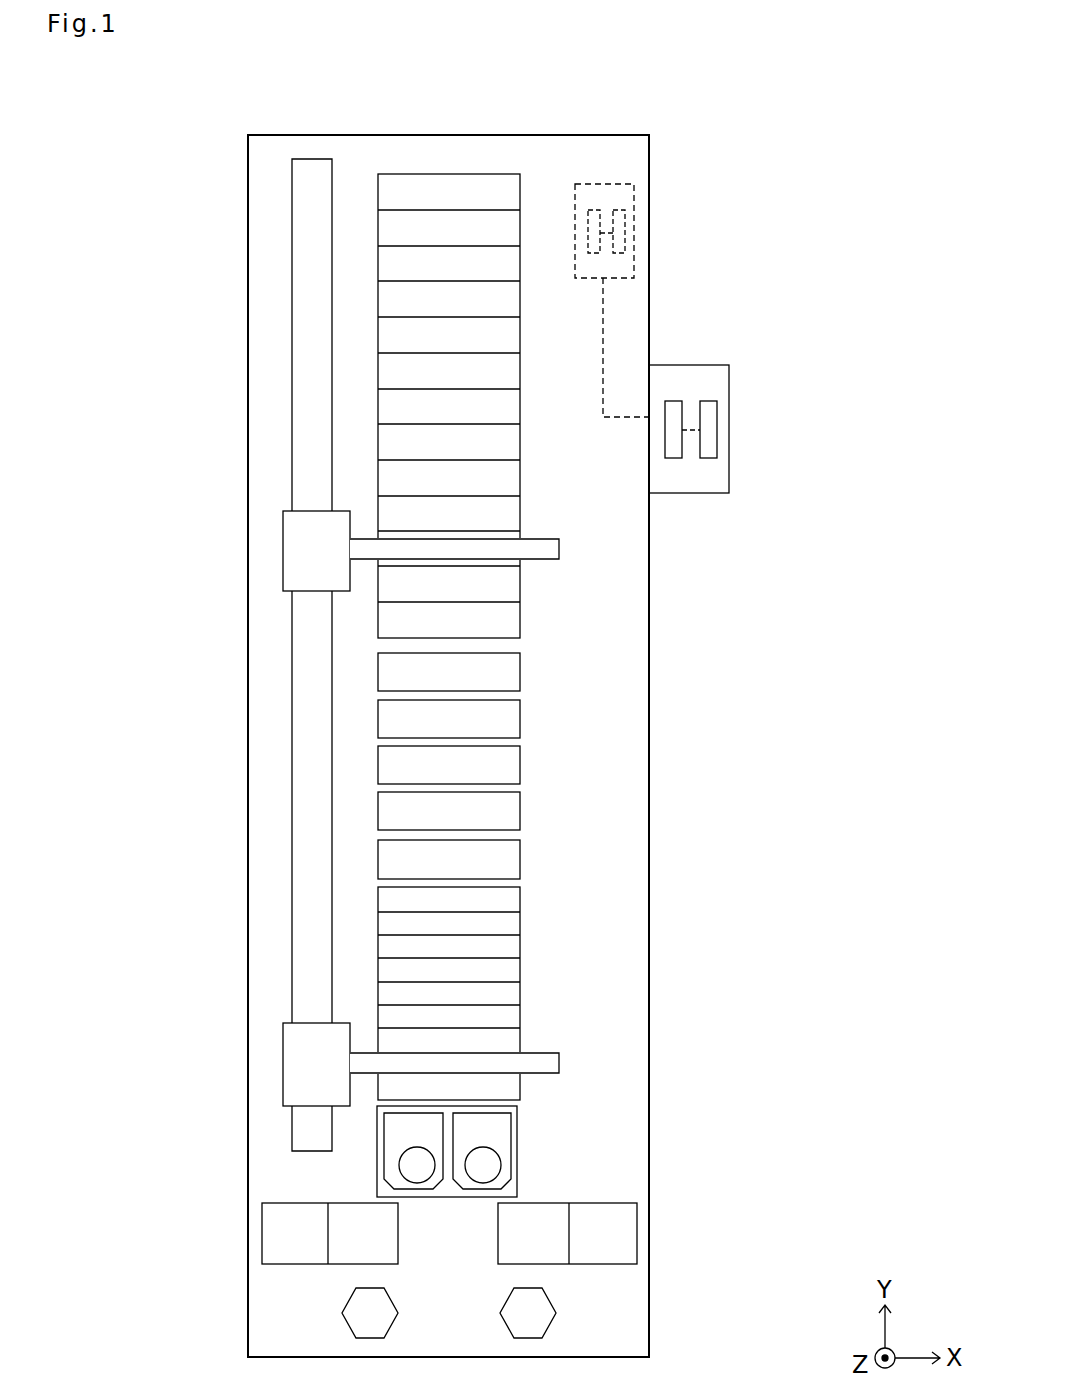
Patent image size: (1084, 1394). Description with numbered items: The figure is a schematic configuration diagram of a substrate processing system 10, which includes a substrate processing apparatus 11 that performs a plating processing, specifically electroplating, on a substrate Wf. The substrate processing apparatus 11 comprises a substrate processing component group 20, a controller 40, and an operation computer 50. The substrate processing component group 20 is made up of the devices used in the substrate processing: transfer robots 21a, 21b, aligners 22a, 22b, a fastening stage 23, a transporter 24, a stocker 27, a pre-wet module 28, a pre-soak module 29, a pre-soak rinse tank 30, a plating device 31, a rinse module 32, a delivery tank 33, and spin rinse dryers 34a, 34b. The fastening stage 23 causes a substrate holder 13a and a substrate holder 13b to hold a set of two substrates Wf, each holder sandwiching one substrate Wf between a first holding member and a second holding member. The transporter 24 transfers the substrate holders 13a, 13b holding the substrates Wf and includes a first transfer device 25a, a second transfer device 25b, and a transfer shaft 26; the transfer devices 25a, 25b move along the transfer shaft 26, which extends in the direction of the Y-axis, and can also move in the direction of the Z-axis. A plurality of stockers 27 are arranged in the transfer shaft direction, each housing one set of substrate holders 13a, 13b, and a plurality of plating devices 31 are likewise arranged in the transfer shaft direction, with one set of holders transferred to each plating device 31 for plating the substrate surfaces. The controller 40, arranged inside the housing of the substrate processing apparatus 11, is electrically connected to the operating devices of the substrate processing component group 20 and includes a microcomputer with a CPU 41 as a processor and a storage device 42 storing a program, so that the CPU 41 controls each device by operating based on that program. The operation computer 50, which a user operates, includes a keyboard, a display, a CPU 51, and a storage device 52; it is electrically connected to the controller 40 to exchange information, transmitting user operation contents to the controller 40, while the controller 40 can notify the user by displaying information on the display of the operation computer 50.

The substrate processing system 10 is at (145, 118).
The substrate processing apparatus 11 is at (247, 168).
The substrate holder 13a is at (388, 1130).
The substrate holder 13b is at (500, 1128).
The substrate processing component group 20 is at (612, 765).
The transfer robot 21a is at (342, 1313).
The transfer robot 21b is at (556, 1313).
The aligner 22a is at (388, 1242).
The aligner 22b is at (500, 1246).
The fastening stage 23 is at (517, 1170).
The transporter 24 is at (290, 813).
The first transfer device 25a is at (292, 1063).
The second transfer device 25b is at (292, 551).
The transfer shaft 26 is at (292, 678).
The stocker 27 is at (520, 899).
The pre-wet module 28 is at (520, 860).
The pre-soak module 29 is at (520, 811).
The pre-soak rinse tank 30 is at (520, 765).
The plating device 31 is at (520, 192).
The rinse module 32 is at (520, 672).
The delivery tank 33 is at (520, 719).
The spin rinse dryer 34a is at (270, 1230).
The spin rinse dryer 34b is at (618, 1230).
The controller 40 is at (640, 195).
The Central Processing Unit (CPU) 41 is at (592, 208).
The storage device 42 is at (619, 208).
The operation computer 50 is at (732, 478).
The CPU 51 is at (672, 401).
The storage device 52 is at (712, 401).
The substrate Wf is at (418, 1172).